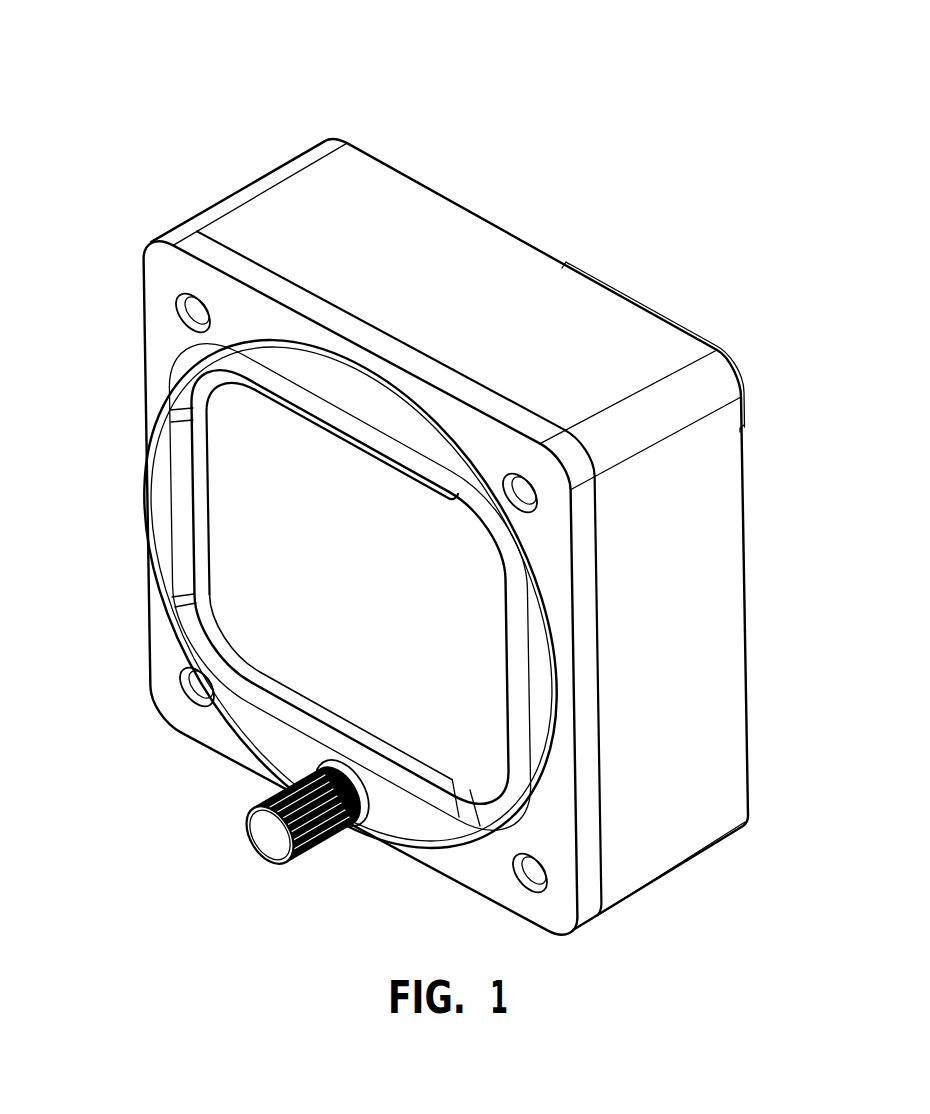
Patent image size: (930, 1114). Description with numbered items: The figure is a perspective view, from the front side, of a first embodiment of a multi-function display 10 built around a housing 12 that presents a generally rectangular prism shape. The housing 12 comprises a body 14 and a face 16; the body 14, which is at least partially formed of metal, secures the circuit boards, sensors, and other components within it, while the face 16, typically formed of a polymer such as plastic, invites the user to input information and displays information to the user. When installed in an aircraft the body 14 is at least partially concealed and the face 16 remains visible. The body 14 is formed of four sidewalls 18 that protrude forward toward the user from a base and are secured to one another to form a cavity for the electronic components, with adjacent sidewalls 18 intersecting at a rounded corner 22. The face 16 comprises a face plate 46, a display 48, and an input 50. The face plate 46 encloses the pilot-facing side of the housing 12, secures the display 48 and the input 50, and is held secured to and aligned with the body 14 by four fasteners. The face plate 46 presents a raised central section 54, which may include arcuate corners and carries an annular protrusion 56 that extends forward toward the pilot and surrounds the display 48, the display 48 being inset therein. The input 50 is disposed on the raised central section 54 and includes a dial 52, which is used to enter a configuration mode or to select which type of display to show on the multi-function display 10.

The multi-function display 10 is at (110, 34).
The housing 12 is at (469, 525).
The body 14 is at (326, 142).
The face 16 is at (123, 787).
The sidewalls 18 is at (447, 213).
The rounded corner 22 is at (253, 180).
The face plate 46 is at (150, 267).
The display 48 is at (203, 546).
The input 50 is at (301, 835).
The dial 52 is at (316, 846).
The raised central section 54 is at (410, 849).
The annular protrusion 56 is at (175, 393).